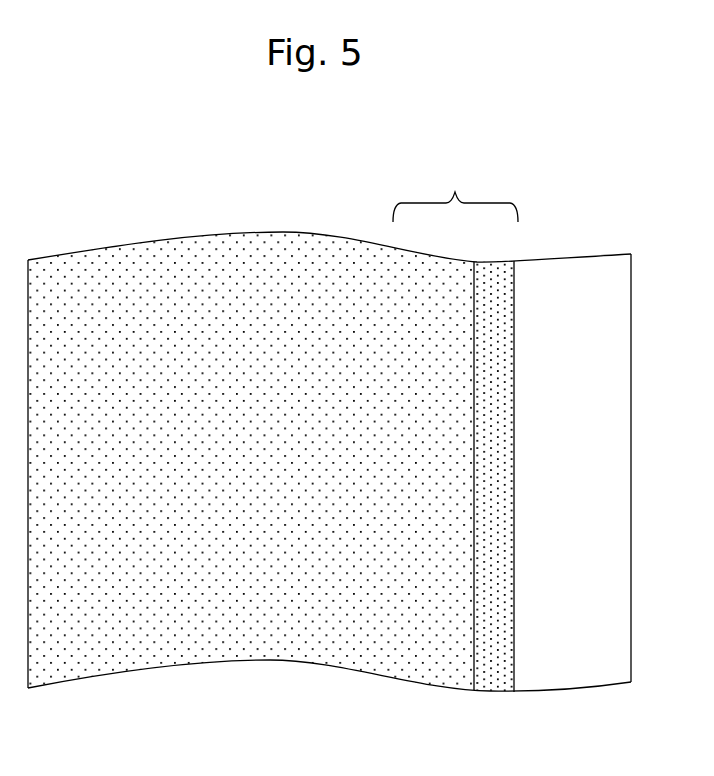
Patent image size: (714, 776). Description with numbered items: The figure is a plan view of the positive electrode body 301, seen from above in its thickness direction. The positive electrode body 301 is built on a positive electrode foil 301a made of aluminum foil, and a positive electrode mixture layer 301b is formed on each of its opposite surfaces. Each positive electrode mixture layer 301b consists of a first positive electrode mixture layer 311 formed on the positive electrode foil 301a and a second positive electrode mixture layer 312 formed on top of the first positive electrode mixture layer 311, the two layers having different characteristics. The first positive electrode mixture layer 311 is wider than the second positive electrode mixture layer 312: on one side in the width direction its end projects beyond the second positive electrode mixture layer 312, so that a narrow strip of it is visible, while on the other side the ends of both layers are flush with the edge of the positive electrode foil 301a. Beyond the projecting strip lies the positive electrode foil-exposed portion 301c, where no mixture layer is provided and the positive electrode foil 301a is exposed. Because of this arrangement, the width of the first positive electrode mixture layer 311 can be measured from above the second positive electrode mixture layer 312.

The positive electrode body 301 is at (608, 205).
The positive electrode foil 301a is at (568, 285).
The positive electrode mixture layer 301b is at (455, 195).
The positive electrode foil-exposed portion 301c is at (568, 670).
The first positive electrode mixture layer 311 is at (495, 283).
The second positive electrode mixture layer 312 is at (413, 283).